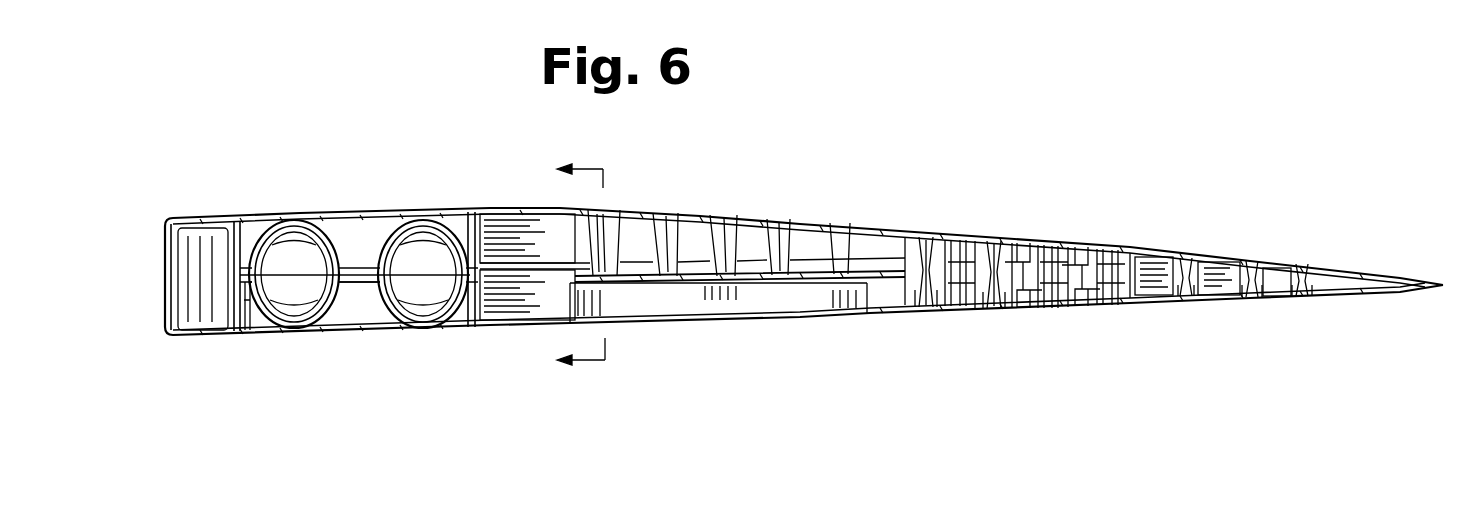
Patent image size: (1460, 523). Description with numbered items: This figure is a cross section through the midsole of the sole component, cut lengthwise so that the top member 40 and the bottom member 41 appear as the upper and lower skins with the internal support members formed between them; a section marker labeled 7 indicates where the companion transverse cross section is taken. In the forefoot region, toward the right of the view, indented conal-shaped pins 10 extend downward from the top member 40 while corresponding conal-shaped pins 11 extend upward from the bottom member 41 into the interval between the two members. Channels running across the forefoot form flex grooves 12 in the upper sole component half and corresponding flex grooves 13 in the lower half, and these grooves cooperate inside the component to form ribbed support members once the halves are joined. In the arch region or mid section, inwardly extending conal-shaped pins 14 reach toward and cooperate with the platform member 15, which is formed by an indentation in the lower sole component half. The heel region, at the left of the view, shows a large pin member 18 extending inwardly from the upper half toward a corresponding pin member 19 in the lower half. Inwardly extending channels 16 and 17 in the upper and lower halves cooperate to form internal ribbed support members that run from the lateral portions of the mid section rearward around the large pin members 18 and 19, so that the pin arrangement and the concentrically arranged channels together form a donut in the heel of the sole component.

The section line 7- 7 is at (593, 264).
The conal-shaped pins 10 is at (928, 237).
The conal-shaped pins 11 is at (932, 313).
The flex grooves 12 is at (1023, 240).
The flex grooves 13 is at (1023, 312).
The conal-shaped pins 14 is at (722, 222).
The platform member 15 is at (692, 283).
The inwardly extending channel 16 is at (463, 220).
The inwardly extending channel 17 is at (248, 337).
The large pin member 18 is at (360, 228).
The pin member 19 is at (355, 330).
The top member 40 is at (1337, 263).
The bottom member 41 is at (1357, 297).